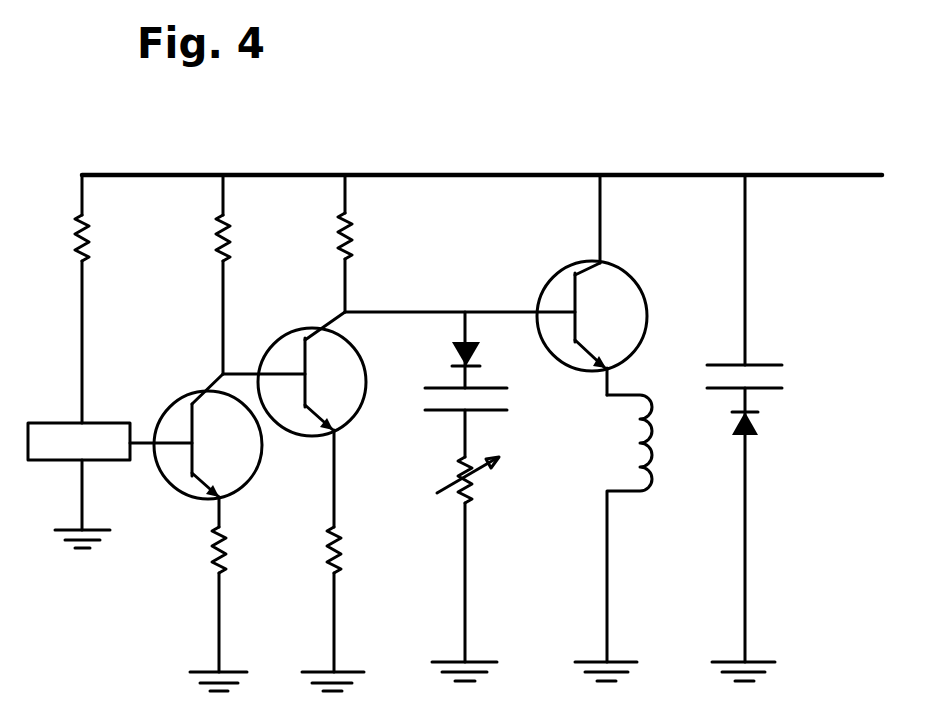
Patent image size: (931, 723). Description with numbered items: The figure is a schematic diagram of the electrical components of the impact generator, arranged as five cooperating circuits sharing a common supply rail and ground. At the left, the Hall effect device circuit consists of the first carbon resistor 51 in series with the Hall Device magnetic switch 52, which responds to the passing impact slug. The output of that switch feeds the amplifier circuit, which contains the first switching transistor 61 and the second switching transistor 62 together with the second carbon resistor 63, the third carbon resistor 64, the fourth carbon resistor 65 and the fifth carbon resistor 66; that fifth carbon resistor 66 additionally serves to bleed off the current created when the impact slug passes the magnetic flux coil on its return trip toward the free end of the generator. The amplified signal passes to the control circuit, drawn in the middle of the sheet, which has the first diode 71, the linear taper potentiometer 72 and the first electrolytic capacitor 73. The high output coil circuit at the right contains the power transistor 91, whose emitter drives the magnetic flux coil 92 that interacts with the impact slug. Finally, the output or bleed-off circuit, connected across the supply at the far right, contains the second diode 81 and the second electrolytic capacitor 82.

The carbon resistor R1 51 is at (92, 257).
The Hall Device magnetic switch 52 is at (47, 462).
The switching transistor T1 61 is at (177, 470).
The switching transistor T2 62 is at (345, 417).
The carbon resistor R2 63 is at (238, 242).
The carbon resistor R3 64 is at (224, 567).
The carbon resistor R4 65 is at (360, 245).
The carbon resistor R5 66 is at (338, 565).
The diode D1 71 is at (453, 357).
The linear taper potentiometer R6 72 is at (475, 482).
The electrolytic capacitor C1 73 is at (497, 417).
The diode D2 81 is at (757, 423).
The electrolytic capacitor C2 82 is at (753, 362).
The power transistor T3 91 is at (620, 287).
The magnetic flux coil CZ 1 92 is at (650, 453).